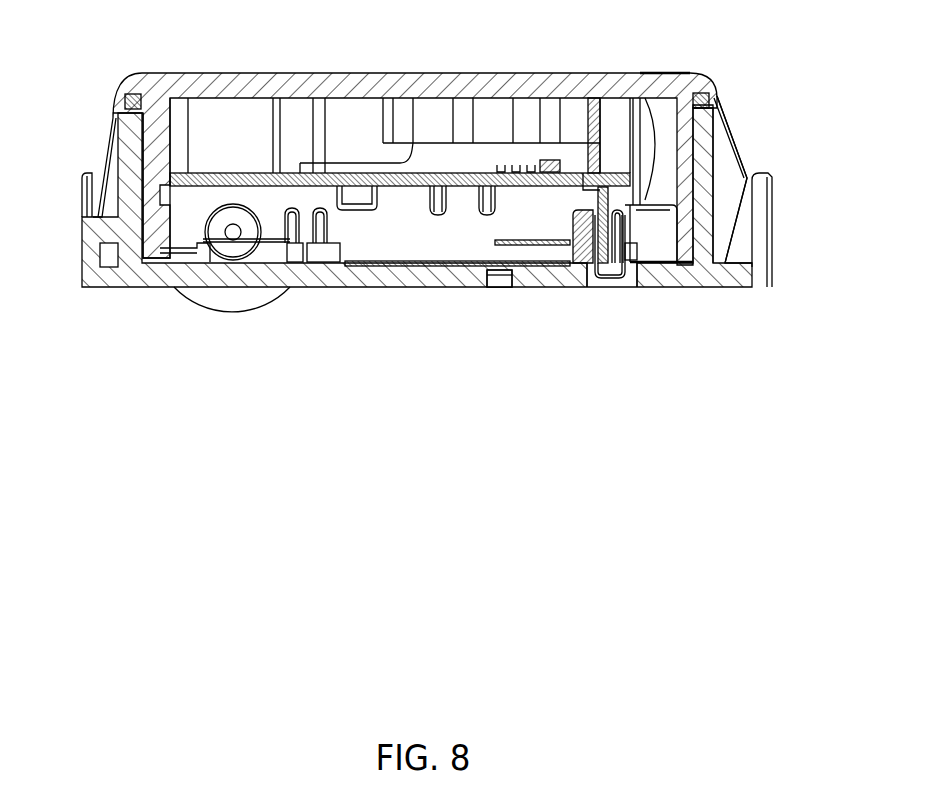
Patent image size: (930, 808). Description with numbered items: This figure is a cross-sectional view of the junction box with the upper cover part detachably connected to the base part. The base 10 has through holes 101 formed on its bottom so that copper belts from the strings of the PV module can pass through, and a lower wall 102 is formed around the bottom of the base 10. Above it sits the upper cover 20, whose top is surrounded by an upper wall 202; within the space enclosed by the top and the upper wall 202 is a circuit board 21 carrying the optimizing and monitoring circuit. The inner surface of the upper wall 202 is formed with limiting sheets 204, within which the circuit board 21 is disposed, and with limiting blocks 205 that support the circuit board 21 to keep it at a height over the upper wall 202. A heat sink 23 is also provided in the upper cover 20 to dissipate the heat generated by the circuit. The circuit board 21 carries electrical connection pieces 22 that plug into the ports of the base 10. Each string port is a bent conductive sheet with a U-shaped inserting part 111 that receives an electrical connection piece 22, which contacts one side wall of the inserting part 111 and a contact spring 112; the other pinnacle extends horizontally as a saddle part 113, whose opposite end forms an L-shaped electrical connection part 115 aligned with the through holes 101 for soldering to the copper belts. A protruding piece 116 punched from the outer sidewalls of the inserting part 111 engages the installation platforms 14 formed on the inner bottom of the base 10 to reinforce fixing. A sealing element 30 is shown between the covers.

The base 10 is at (388, 280).
The through holes 101 is at (497, 277).
The lower wall 102 is at (718, 192).
The upper cover 20 is at (358, 84).
The upper wall 202 is at (683, 152).
The limiting sheets 204 is at (173, 137).
The limiting blocks 205 is at (357, 203).
The circuit board 21 is at (427, 180).
The electrical connection pieces 22 is at (617, 202).
The heat sink 23 is at (530, 143).
The sealing member 30 is at (697, 92).
The inserting part 111 is at (612, 277).
The contact spring 112 is at (627, 258).
The saddle part 113 is at (590, 187).
The electrical connection part 115 is at (497, 241).
The protruding piece 116 is at (595, 262).
The installation platforms 14 is at (637, 232).